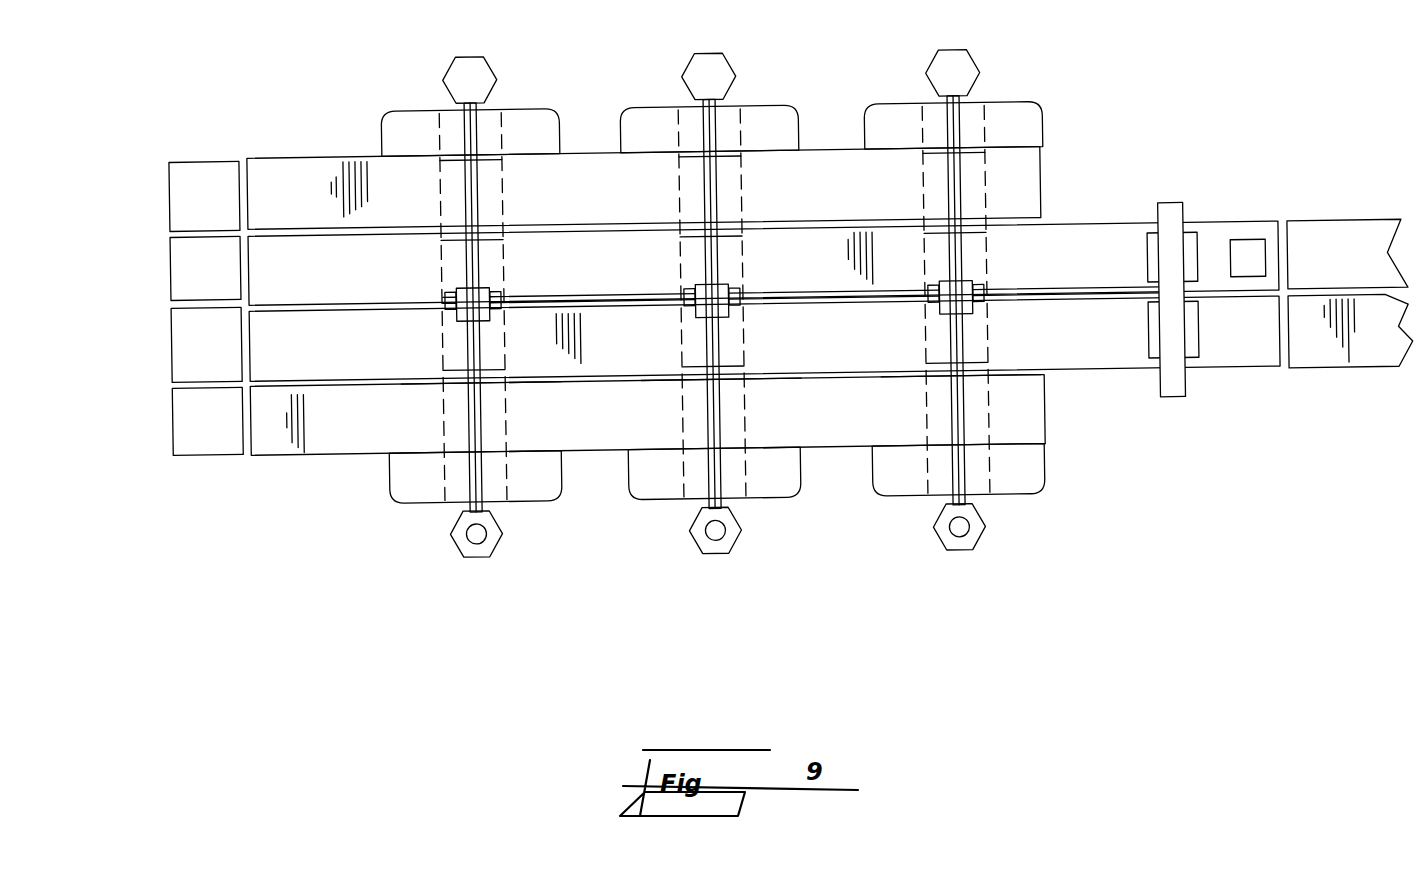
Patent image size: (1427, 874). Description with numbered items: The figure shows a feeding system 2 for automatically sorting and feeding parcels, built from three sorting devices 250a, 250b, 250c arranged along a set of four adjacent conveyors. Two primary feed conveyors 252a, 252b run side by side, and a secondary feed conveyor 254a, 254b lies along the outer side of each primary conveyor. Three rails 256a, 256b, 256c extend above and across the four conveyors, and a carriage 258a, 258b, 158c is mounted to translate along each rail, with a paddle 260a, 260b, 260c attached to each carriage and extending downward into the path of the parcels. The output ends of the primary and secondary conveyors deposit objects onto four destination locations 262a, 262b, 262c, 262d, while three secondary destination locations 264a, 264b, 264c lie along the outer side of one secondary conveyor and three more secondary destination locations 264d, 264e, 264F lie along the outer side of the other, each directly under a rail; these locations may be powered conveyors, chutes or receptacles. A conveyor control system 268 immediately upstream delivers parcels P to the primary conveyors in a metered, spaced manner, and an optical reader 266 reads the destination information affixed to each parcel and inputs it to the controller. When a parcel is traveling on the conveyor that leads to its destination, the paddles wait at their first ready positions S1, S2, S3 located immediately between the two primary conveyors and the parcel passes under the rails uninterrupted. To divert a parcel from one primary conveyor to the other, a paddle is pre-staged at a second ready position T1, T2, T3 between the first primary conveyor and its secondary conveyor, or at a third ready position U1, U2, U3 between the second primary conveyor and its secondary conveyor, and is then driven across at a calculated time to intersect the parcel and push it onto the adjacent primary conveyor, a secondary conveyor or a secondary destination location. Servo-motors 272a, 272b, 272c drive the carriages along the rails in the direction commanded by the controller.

The feeding system 2 is at (1092, 547).
The sorting device 250a is at (937, 565).
The sorting device 250b is at (704, 562).
The sorting device 250c is at (456, 567).
The primary feed conveyor 252a is at (1118, 282).
The primary feed conveyor 252b is at (1118, 358).
The secondary feed conveyor 254a is at (1027, 172).
The secondary feed conveyor 254b is at (1038, 428).
The rail 256a is at (950, 423).
The rail 256b is at (735, 420).
The rail 256c is at (485, 420).
The carriage 258a is at (937, 318).
The carriage 258b is at (700, 318).
The carriage 158c is at (447, 300).
The paddle 260a is at (985, 298).
The paddle 260b is at (740, 292).
The paddle 260c is at (500, 300).
The destination location 262a is at (170, 185).
The destination location 262b is at (172, 258).
The destination location 262c is at (172, 338).
The destination location 262d is at (193, 458).
The secondary destination location 264a is at (1010, 120).
The secondary destination location 264b is at (790, 127).
The secondary destination location 264c is at (535, 123).
The secondary destination location 264d is at (1033, 495).
The secondary destination location 264e is at (780, 487).
The secondary destination location 264F is at (537, 490).
The optical reader 266 is at (1198, 248).
The conveyor control system 268 is at (1342, 235).
The servo-motor 272a is at (960, 527).
The servo-motor 272b is at (738, 544).
The servo-motor 272c is at (480, 534).
The parcel P is at (1243, 265).
The second ready position T1 is at (935, 192).
The second ready position T2 is at (697, 200).
The second ready position T3 is at (457, 203).
The first ready position S1 is at (937, 258).
The first ready position S2 is at (697, 266).
The first ready position S3 is at (458, 270).
The third ready position U1 is at (942, 350).
The third ready position U2 is at (700, 357).
The third ready position U3 is at (457, 348).